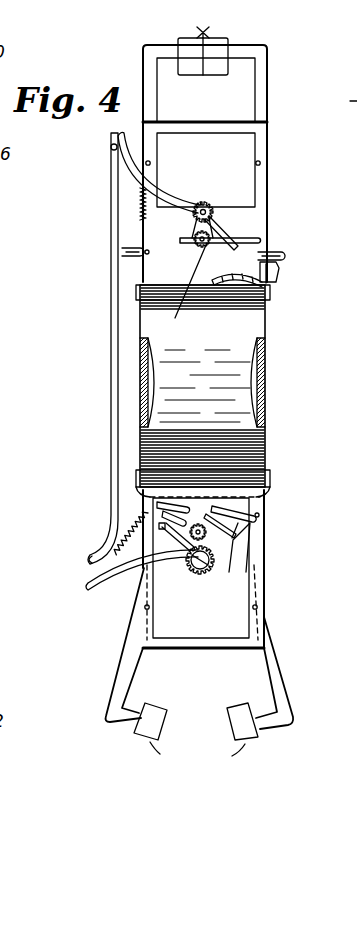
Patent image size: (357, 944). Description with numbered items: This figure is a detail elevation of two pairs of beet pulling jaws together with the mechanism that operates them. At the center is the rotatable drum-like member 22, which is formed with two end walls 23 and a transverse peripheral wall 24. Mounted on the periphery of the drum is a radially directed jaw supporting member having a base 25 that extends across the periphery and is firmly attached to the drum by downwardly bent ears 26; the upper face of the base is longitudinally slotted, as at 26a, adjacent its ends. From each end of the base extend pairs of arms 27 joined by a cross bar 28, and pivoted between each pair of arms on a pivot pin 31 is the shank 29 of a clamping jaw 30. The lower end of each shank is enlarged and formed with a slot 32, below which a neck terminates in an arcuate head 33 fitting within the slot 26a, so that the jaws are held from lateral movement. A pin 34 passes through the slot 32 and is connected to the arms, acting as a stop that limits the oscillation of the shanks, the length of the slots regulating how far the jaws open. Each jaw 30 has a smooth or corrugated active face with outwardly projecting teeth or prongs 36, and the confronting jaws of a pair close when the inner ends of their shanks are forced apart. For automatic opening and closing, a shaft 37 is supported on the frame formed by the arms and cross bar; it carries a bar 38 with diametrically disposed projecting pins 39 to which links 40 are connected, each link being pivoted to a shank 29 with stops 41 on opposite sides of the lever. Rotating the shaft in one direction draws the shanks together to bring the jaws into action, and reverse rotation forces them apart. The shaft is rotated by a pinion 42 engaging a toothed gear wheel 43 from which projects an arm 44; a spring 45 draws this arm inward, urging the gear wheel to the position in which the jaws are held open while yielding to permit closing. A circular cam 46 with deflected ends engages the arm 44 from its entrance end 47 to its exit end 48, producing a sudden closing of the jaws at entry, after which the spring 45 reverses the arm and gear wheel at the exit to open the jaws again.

The rotatable drum-like member 22 is at (274, 335).
The end walls 23 is at (148, 370).
The transverse peripheral wall 24 is at (202, 386).
The base 25 is at (200, 282).
The downwardly bent ears 26 is at (136, 292).
The slot 26a is at (262, 257).
The arms 27 is at (259, 152).
The cross bar 28 is at (214, 128).
The shank 29 is at (145, 77).
The clamping jaw 30 is at (222, 53).
The pivot pin 31 is at (261, 166).
The slot 32 is at (124, 252).
The arcuate head 33 is at (268, 282).
The pin 34 is at (140, 248).
The teeth or prongs 36 is at (207, 28).
The shaft 37 is at (199, 205).
The bar 38 is at (226, 236).
The projecting pins 39 is at (203, 524).
The links 40 is at (169, 244).
The stops 41 is at (162, 528).
The pinion 42 is at (226, 582).
The toothed gear wheel 43 is at (205, 200).
The arm 44 is at (125, 165).
The spring 45 is at (140, 204).
The cam 46 is at (110, 416).
The entrance end 47 is at (86, 561).
The exit end 48 is at (111, 147).